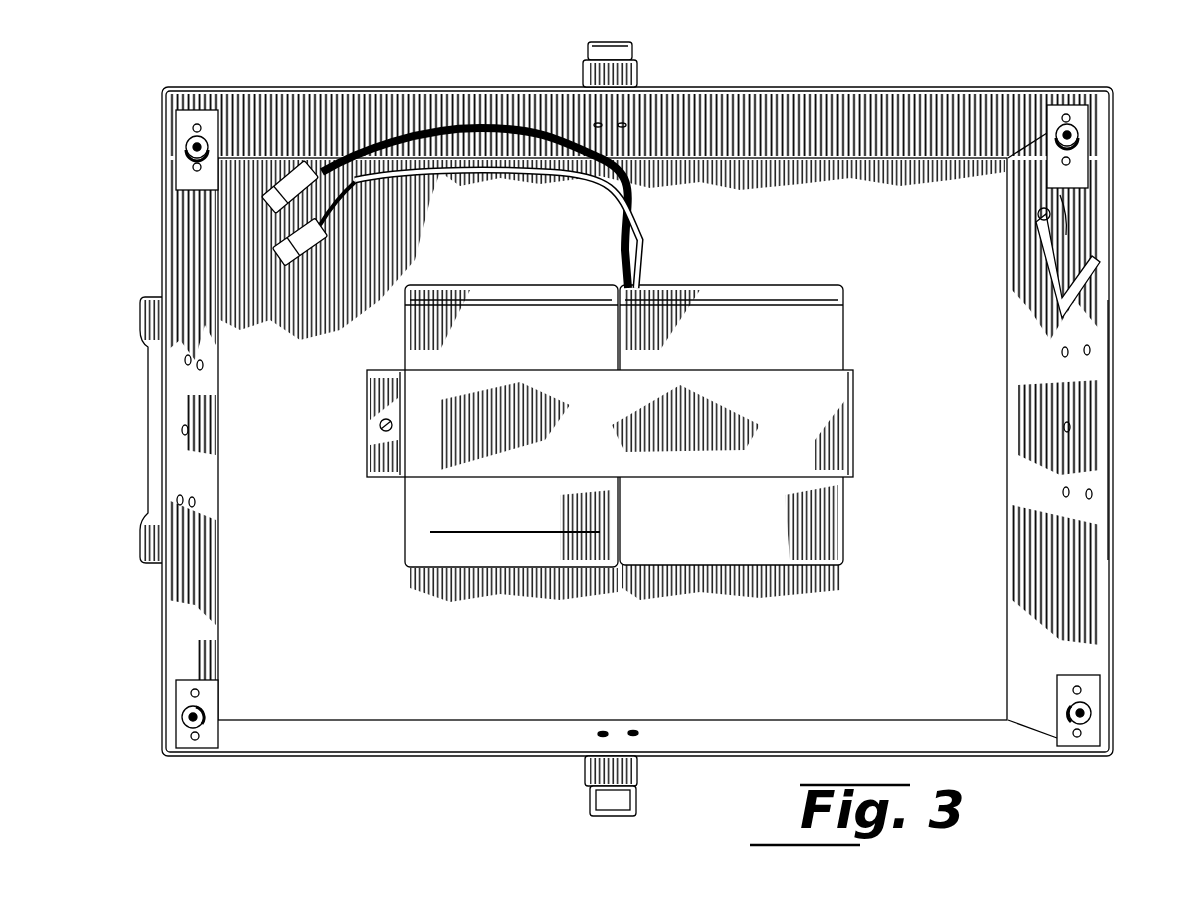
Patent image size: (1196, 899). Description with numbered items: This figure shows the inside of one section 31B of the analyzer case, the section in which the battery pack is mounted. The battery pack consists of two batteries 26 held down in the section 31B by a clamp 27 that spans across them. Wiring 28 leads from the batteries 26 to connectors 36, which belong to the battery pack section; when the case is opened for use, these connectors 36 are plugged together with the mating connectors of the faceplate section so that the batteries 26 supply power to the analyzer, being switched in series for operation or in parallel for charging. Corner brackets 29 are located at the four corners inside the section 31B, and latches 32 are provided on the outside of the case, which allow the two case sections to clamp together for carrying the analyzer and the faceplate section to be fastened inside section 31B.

The battery 26 is at (560, 285).
The clamp 27 is at (845, 437).
The wiring harness 28 is at (603, 220).
The corner mounting bracket 29 is at (188, 112).
The section of the case 31B is at (777, 96).
The latch 32 is at (150, 437).
The connectors of the battery pack section 36 is at (307, 190).